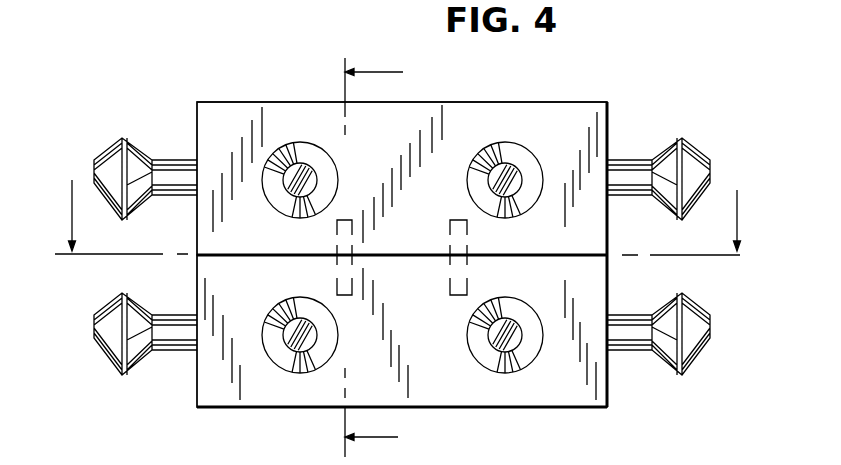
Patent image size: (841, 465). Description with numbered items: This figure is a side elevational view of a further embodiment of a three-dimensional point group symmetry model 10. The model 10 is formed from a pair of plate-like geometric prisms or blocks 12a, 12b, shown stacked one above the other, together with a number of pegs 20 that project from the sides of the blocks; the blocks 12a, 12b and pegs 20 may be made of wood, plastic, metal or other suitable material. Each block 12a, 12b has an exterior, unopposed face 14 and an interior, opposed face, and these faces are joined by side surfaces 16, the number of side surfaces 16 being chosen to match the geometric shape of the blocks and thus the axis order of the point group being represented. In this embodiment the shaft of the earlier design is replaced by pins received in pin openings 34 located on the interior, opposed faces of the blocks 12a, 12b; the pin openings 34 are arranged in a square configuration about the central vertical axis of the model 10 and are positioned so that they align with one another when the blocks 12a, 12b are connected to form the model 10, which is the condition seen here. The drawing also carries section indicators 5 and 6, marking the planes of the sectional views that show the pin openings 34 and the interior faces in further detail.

The point group symmetry model 10 is at (186, 101).
The block 12a is at (607, 102).
The block 12b is at (607, 407).
The exterior face 14 is at (445, 102).
The side surfaces 16 is at (608, 267).
The pegs 20 is at (105, 160).
The pin openings 34 is at (347, 231).
The section line 5- 5 is at (399, 232).
The section line 6- 6 is at (361, 257).